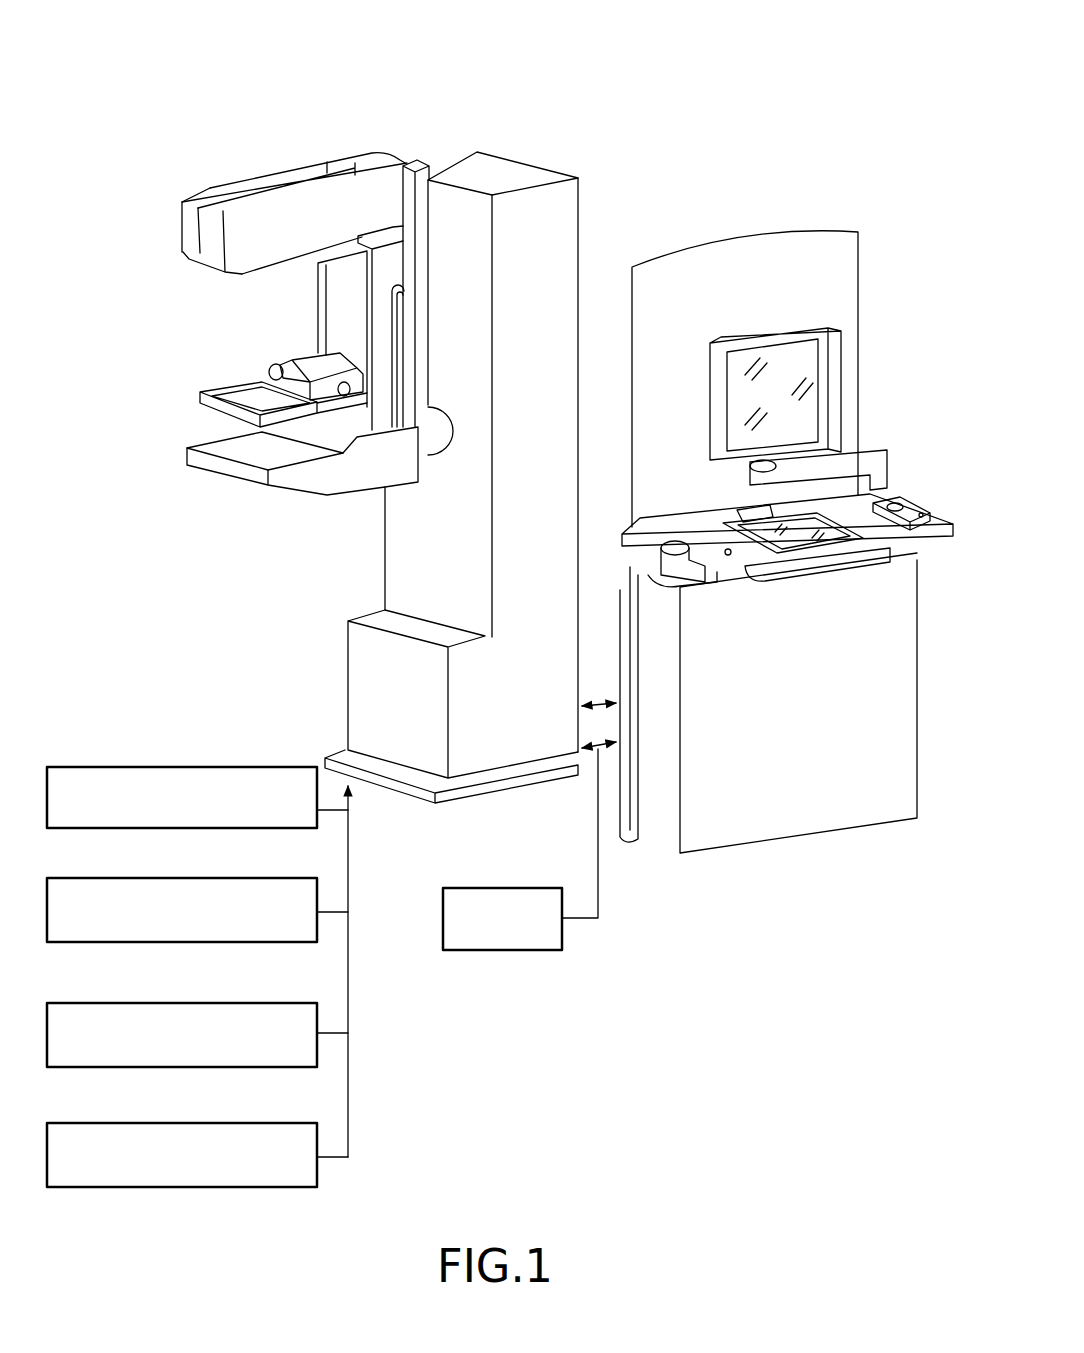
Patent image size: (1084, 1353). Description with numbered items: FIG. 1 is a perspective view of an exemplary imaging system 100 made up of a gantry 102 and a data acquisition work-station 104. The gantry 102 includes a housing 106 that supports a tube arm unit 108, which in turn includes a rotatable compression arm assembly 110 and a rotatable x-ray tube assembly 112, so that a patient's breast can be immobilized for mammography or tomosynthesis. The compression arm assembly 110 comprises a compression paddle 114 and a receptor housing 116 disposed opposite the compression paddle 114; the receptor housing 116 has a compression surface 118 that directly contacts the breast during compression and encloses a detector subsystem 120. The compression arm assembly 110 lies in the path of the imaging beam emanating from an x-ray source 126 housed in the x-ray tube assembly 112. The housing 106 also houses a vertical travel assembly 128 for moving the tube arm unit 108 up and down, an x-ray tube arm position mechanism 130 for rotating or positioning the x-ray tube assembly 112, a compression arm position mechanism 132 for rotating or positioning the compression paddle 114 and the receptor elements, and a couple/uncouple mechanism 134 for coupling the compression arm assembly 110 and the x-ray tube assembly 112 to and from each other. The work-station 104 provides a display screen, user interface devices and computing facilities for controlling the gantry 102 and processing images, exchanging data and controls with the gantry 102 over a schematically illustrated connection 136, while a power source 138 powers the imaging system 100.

The imaging system 100 is at (798, 81).
The gantry 102 is at (533, 100).
The data acquisition work-station 104 is at (807, 217).
The housing 106 is at (562, 168).
The tube arm unit 108 is at (396, 150).
The compression arm assembly 110 is at (255, 358).
The x-ray tube assembly 112 is at (207, 190).
The compression paddle 114 is at (216, 390).
The receptor housing 116 is at (186, 462).
The compression surface 118 is at (210, 446).
The detector subsystem 120 is at (345, 500).
The x-ray source 126 is at (205, 281).
The vertical travel assembly 128 is at (168, 765).
The x-ray tube arm position mechanism 130 is at (317, 892).
The compression arm position mechanism 132 is at (317, 1012).
The couple/uncouple mechanism 134 is at (317, 1135).
The connection 136 is at (586, 709).
The power source 138 is at (443, 918).